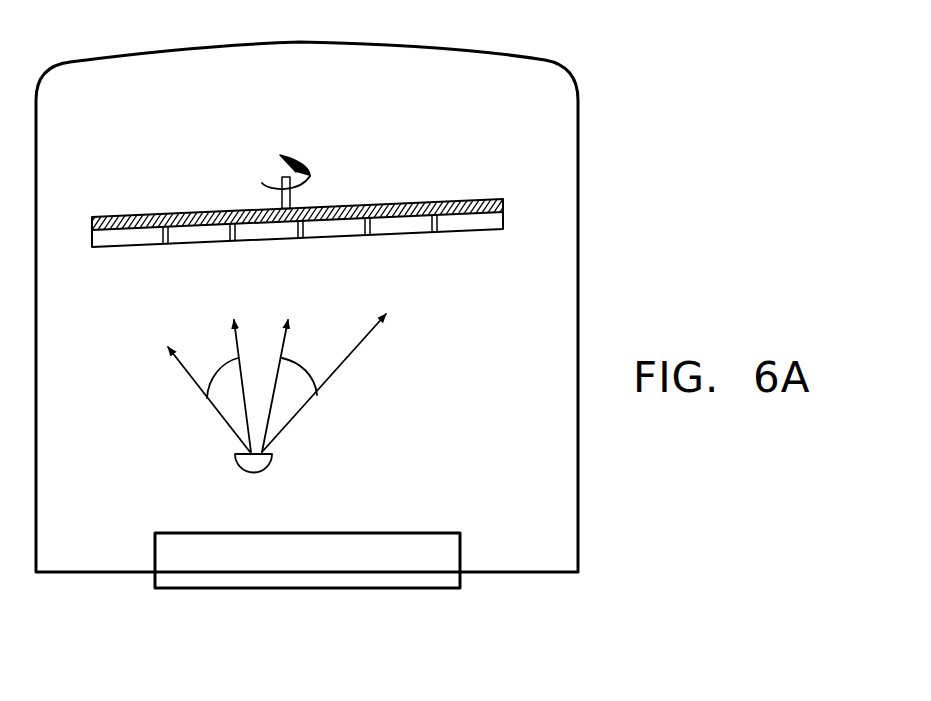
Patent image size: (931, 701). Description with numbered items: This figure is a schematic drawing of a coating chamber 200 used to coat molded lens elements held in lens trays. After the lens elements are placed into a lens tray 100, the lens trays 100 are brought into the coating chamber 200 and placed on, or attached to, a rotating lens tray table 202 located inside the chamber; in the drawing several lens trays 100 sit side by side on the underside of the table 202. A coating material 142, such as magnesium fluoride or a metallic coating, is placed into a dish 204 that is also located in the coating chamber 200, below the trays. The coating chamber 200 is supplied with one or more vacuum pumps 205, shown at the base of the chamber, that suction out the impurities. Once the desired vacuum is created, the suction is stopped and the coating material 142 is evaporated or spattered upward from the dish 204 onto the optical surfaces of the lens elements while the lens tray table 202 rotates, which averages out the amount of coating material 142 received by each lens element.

The coating chamber 200 is at (490, 53).
The rotating lens tray table 202 is at (427, 202).
The lens tray 100 is at (123, 243).
The coating material 142 is at (210, 383).
The dish 204 is at (260, 468).
The vacuum pump 205 is at (412, 588).